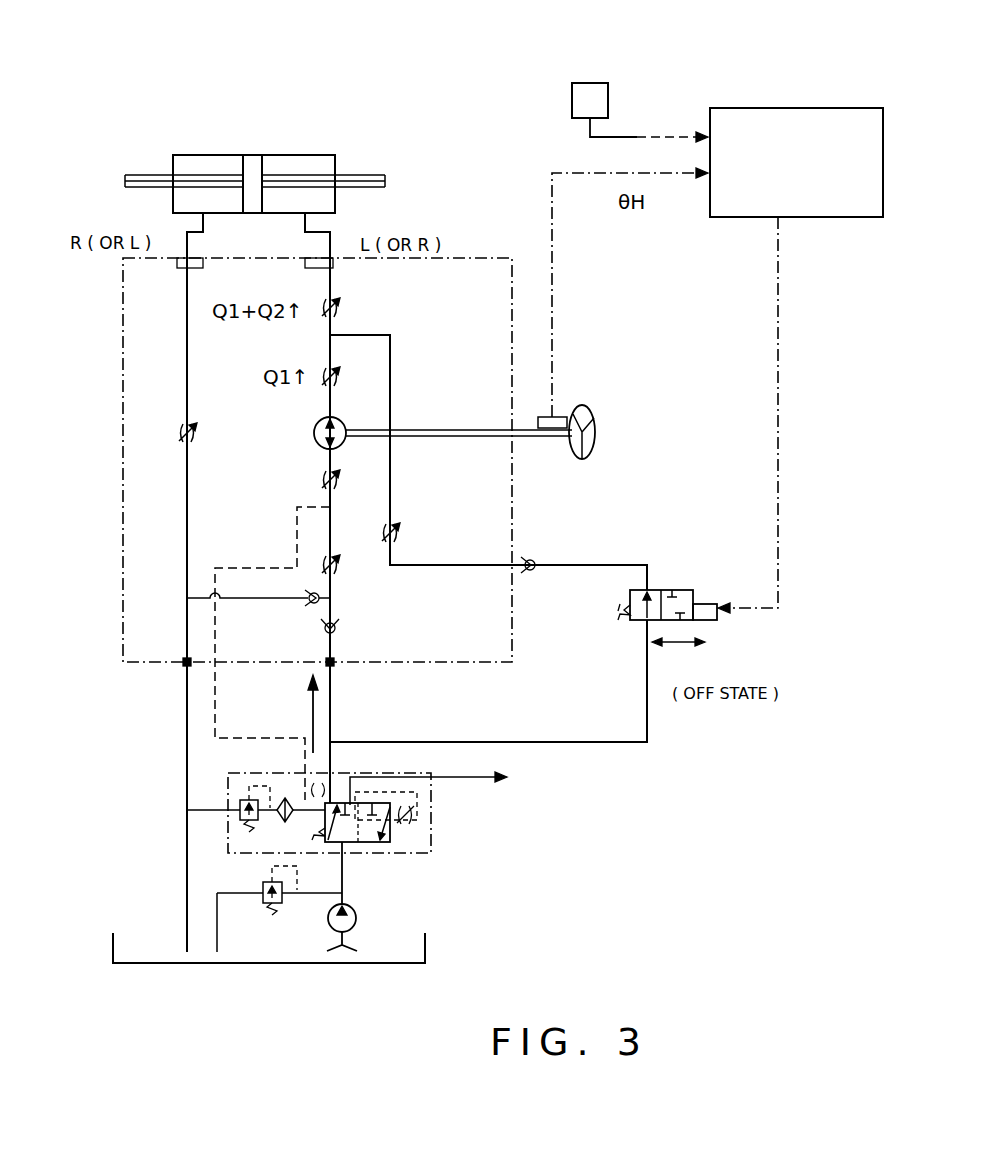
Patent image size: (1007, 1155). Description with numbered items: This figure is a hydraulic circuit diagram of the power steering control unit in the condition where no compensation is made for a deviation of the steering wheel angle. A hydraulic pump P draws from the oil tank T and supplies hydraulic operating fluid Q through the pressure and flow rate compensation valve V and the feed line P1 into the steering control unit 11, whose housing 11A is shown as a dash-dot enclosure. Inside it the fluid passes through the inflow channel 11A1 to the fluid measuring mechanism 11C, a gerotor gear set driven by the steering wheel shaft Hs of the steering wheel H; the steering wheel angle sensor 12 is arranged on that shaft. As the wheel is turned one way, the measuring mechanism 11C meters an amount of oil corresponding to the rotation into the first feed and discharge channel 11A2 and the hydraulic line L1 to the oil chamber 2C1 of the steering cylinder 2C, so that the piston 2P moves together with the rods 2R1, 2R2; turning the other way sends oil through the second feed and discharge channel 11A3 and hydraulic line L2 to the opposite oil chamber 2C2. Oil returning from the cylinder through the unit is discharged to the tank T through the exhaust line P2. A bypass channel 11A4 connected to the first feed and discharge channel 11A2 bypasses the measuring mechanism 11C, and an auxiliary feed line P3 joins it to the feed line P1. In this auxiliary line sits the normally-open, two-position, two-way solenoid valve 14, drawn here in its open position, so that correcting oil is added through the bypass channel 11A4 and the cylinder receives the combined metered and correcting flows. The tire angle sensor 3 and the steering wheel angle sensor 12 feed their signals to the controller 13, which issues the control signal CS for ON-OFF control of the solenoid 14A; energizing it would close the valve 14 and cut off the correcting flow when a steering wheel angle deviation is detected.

The steering cylinder 2C is at (285, 152).
The oil chamber 2C1 is at (320, 165).
The oil chamber 2C2 is at (195, 160).
The piston 2P is at (253, 155).
The rod 2R1 is at (385, 183).
The rod 2R2 is at (125, 181).
The hydraulic line L1 is at (310, 226).
The hydraulic line L2 is at (200, 223).
The tire angle sensor 3 is at (590, 88).
The controller 13 is at (790, 108).
The steering wheel angle sensor 12 is at (560, 417).
The solenoid valve 14 is at (622, 638).
The solenoid 14A is at (707, 600).
The steering control unit 11 is at (112, 378).
The housing 11A is at (123, 527).
The inflow channel 11A1 is at (332, 533).
The first feed and discharge channel 11A2 is at (224, 430).
The second feed and discharge channel 11A3 is at (187, 465).
The bypass channel 11A4 is at (392, 377).
The fluid measuring mechanism 11C is at (314, 434).
The steering wheel H is at (597, 436).
The steering wheel shaft Hs is at (500, 446).
The hydraulic pump P is at (358, 921).
The feed line P1 is at (332, 718).
The exhaust line P2 is at (187, 742).
The auxiliary feed line P3 is at (582, 742).
The hydraulic operating fluid Q is at (299, 714).
The oil tank T is at (165, 965).
The pressure and flow rate compensation valve V is at (432, 832).
The control signal CS is at (755, 433).